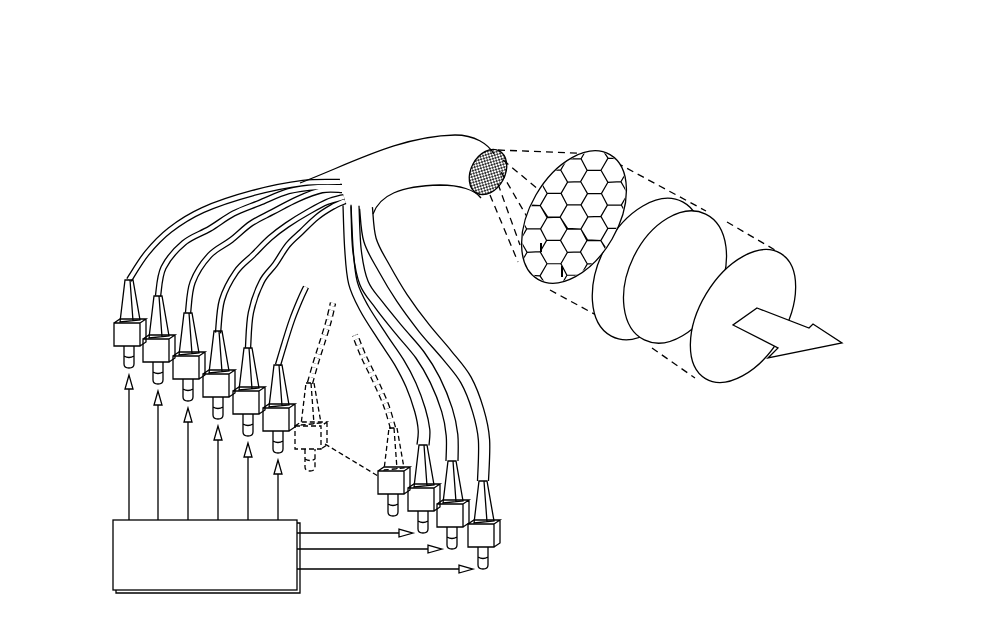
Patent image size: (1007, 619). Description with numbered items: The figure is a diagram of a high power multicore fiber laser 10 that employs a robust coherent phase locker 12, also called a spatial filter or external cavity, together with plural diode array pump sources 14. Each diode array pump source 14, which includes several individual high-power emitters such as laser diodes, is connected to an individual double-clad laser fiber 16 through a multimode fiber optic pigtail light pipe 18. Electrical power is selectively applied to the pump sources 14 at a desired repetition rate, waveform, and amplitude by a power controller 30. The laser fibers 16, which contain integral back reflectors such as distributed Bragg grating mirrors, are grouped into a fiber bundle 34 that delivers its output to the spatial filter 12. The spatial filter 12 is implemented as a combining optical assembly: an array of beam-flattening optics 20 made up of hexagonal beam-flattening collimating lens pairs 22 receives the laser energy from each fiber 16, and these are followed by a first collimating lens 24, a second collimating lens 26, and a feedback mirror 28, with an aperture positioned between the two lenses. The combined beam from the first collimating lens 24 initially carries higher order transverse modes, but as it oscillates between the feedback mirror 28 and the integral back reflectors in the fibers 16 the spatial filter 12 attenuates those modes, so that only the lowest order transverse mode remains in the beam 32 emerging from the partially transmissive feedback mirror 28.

The high power multicore fiber laser 10 is at (203, 128).
The coherent phase locker 12 is at (751, 110).
The diode array pump sources 14 is at (102, 379).
The double-clad laser fibers 16 is at (212, 254).
The multimode fiber optic pigtail light pipes 18 is at (123, 298).
The array of beam-flattening optics 20 is at (632, 149).
The hexagonal beam-flattening collimating lens pairs 22 is at (545, 262).
The first collimating lens 24 is at (684, 195).
The second collimating lens 26 is at (720, 215).
The feedback mirror 28 is at (780, 250).
The power controller 30 is at (299, 523).
The beam 32 is at (823, 340).
The fiber bundle 34 is at (405, 150).